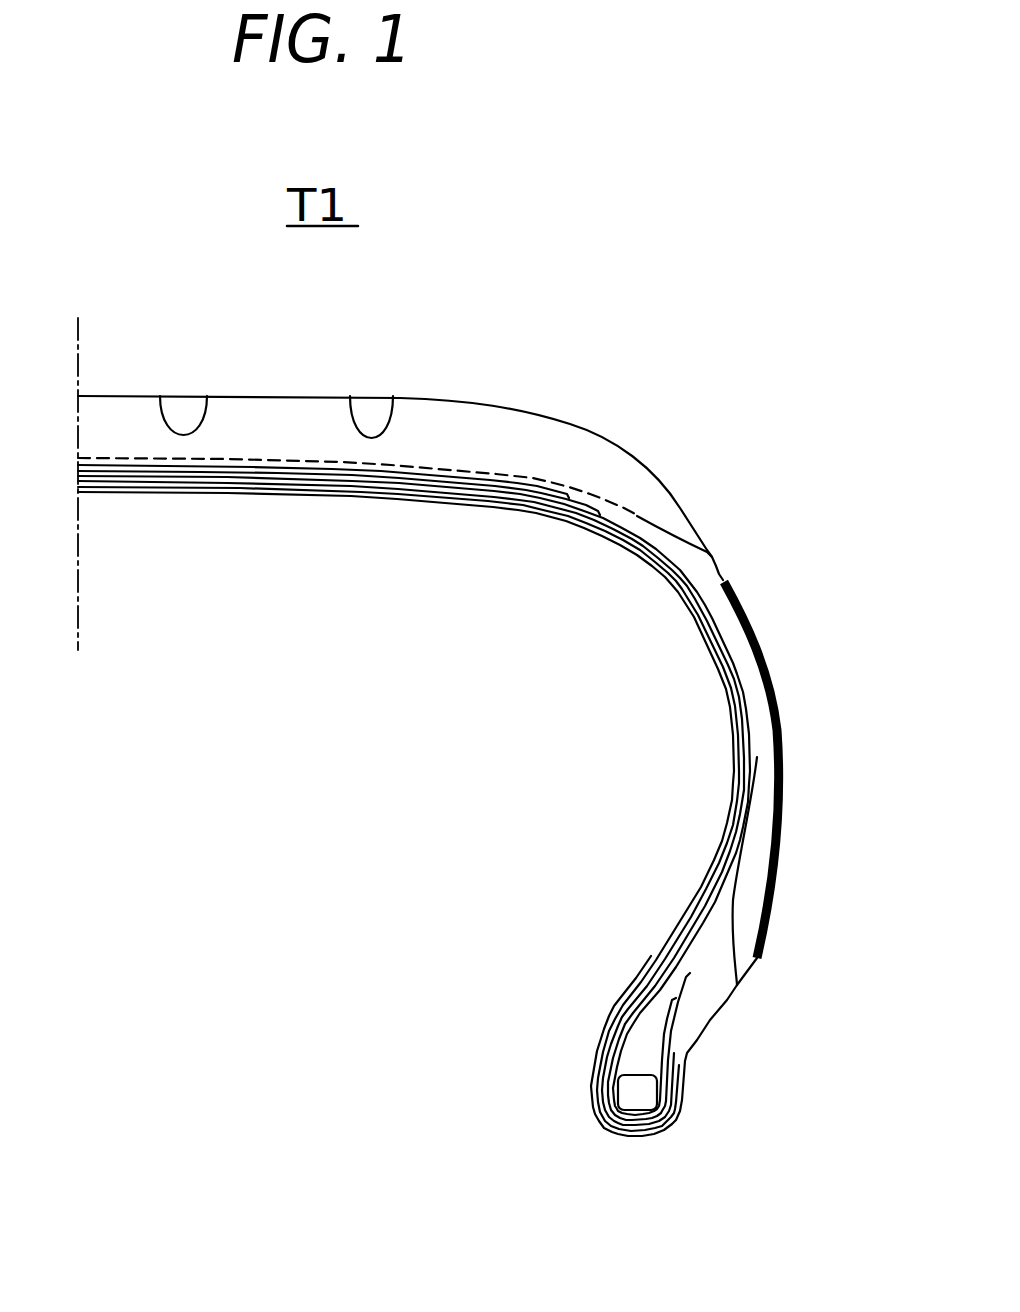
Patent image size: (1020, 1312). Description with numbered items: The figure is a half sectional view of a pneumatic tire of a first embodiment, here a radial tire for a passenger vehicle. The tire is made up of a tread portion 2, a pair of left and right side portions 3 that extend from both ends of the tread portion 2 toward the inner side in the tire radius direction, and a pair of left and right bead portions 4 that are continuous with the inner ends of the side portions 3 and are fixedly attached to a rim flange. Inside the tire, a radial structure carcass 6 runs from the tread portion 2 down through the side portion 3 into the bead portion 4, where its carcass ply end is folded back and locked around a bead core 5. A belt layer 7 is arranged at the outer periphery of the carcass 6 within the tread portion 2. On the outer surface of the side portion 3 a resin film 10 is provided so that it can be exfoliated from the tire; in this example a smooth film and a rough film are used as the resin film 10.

The tread portion 2 is at (250, 390).
The side portion 3 is at (797, 767).
The bead portion 4 is at (741, 1016).
The bead core 5 is at (632, 1090).
The carcass 6 is at (740, 690).
The belt layer 7 is at (306, 473).
The resin film 10 is at (776, 695).